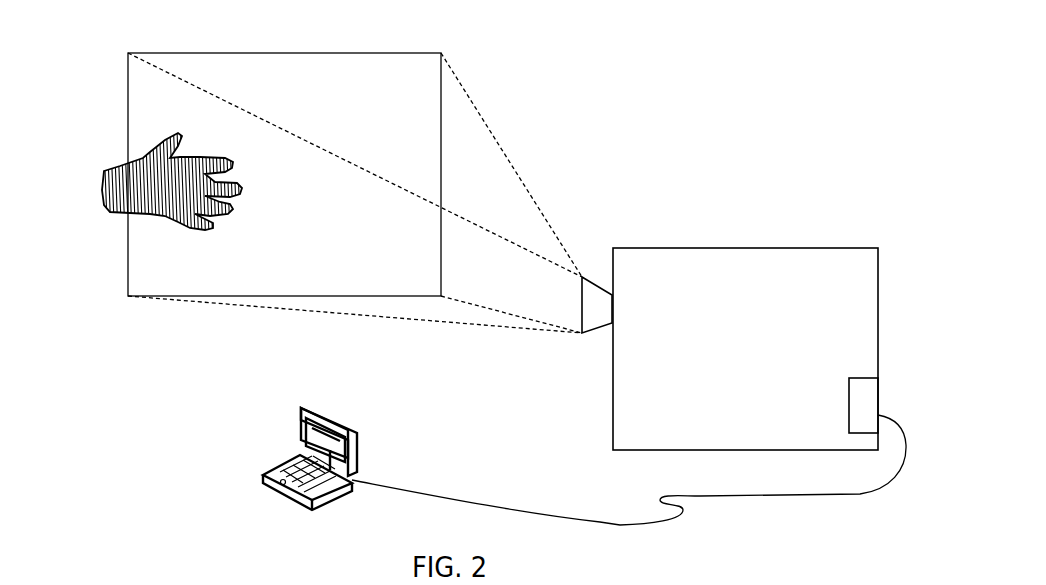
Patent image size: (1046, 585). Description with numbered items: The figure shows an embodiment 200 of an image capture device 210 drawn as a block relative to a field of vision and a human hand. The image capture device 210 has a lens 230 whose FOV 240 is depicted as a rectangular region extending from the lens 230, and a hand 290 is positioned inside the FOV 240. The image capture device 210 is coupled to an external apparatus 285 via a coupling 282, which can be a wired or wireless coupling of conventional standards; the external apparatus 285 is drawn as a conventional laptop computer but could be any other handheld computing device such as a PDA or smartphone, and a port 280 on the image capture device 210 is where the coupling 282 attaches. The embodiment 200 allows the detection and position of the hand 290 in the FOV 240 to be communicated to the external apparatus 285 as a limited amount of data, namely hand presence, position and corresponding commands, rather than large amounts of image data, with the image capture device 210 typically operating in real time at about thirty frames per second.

The embodiment 200 is at (792, 70).
The image capture device 210 is at (756, 248).
The lens 230 is at (600, 268).
The FOV 240 is at (128, 91).
The port 280 is at (861, 378).
The coupling 282 is at (598, 518).
The external apparatus 285 is at (280, 463).
The hand 290 is at (112, 218).